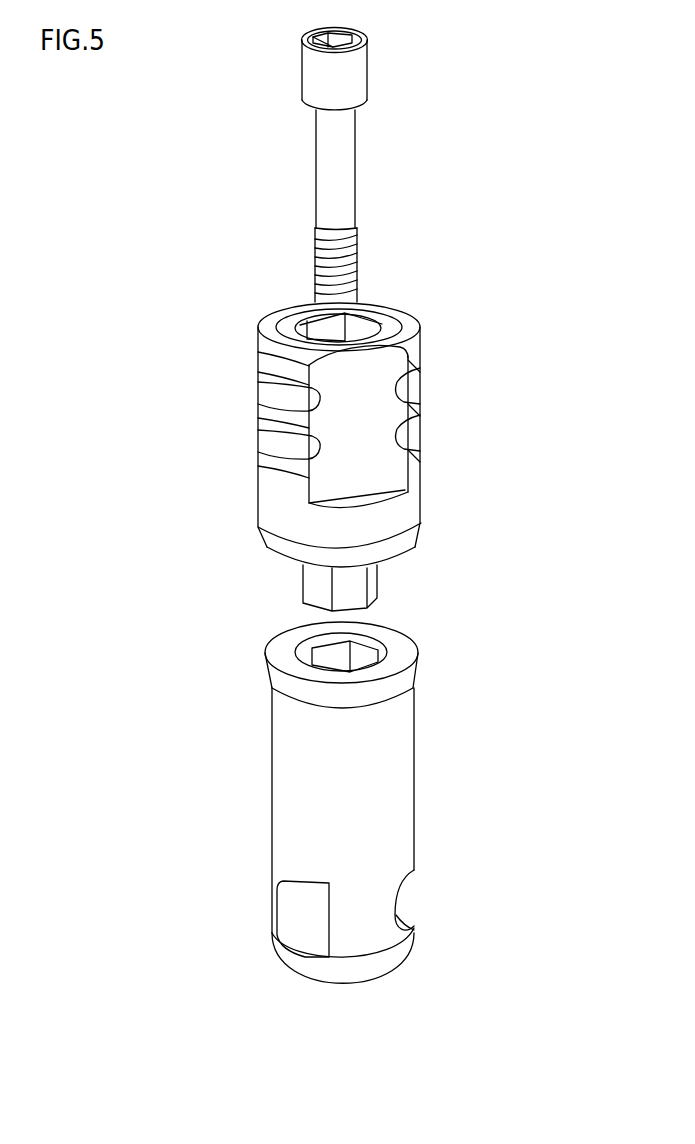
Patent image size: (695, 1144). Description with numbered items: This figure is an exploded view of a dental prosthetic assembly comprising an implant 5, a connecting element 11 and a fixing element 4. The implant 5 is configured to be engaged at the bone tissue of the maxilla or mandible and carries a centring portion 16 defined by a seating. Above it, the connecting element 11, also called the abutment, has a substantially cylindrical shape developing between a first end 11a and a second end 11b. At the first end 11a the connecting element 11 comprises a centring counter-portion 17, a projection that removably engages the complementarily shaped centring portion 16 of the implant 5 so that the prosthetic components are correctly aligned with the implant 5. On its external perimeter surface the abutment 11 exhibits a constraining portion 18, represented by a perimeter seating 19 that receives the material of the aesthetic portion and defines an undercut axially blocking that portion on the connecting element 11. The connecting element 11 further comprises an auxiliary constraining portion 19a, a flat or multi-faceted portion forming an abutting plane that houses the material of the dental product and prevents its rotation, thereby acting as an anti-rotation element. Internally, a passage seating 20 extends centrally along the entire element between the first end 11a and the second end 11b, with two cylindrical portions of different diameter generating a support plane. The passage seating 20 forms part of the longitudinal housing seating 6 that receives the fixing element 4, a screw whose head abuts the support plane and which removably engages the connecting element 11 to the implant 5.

The fixing element 4 is at (358, 163).
The implant 5 is at (374, 790).
The longitudinal housing seating 6 is at (302, 315).
The connecting element 11 is at (398, 416).
The first end 11a is at (402, 562).
The second end 11b is at (413, 338).
The centring portion 16 is at (363, 650).
The centring counter-portion 17 is at (313, 583).
The constraining portion 18 is at (435, 390).
The perimeter seating 19 is at (282, 446).
The auxiliary constraining portion 19a is at (364, 402).
The passage seating 20 is at (368, 318).